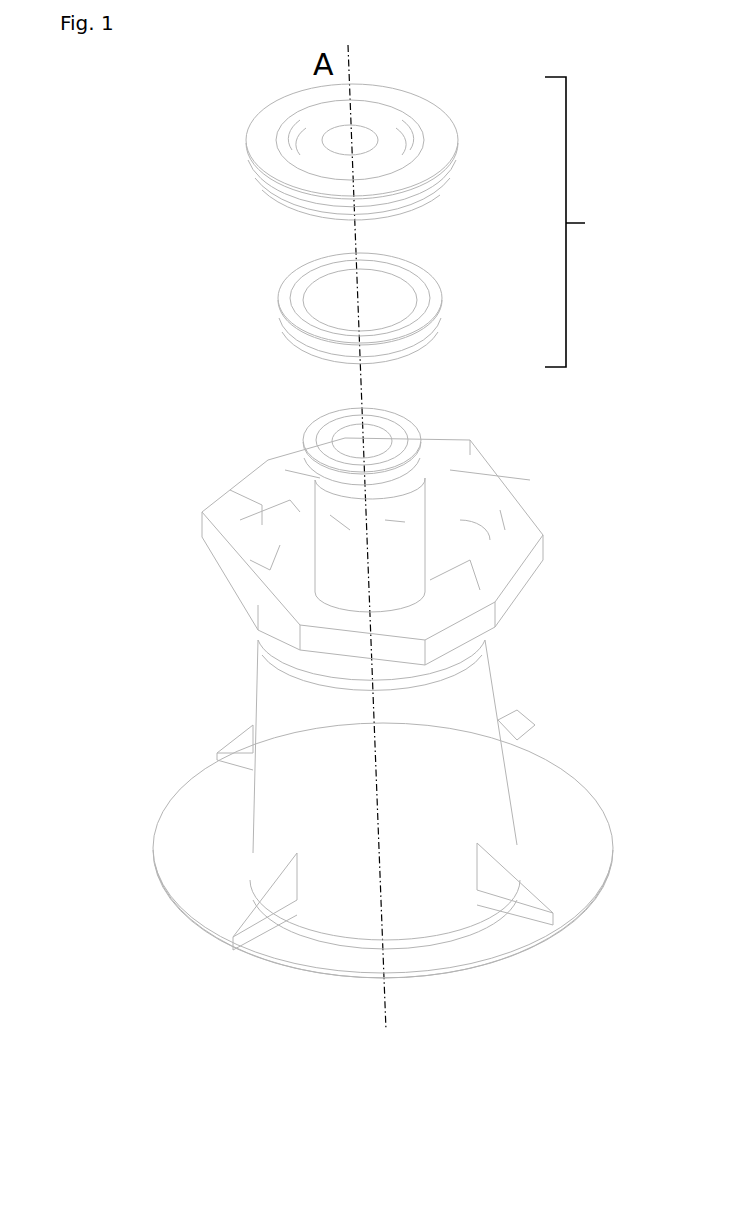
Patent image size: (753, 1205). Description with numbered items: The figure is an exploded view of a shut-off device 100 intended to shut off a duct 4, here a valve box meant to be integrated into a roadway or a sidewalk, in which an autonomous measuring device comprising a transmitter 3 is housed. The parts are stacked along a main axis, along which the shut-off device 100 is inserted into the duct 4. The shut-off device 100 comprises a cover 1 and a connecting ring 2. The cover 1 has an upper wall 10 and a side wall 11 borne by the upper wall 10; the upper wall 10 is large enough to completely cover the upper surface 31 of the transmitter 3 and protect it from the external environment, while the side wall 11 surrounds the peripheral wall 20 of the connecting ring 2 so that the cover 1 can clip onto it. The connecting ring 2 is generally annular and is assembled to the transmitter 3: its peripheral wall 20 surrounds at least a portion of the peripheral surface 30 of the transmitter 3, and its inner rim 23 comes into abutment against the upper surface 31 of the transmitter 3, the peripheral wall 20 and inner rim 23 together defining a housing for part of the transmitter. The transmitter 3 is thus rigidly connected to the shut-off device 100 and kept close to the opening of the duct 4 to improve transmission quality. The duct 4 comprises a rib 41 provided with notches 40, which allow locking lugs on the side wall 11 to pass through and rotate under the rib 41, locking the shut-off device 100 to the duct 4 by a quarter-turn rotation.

The cover 1 is at (337, 135).
The upper wall 10 is at (290, 120).
The side wall 11 is at (408, 228).
The connecting ring 2 is at (357, 289).
The peripheral wall 20 is at (415, 347).
The inner rim 23 is at (307, 275).
The transmitter 3 is at (392, 488).
The peripheral surface 30 is at (430, 480).
The upper surface 31 is at (323, 418).
The notches 40 is at (272, 550).
The rib 41 is at (290, 522).
The duct 4 is at (201, 677).
The shut-off device 100 is at (602, 222).